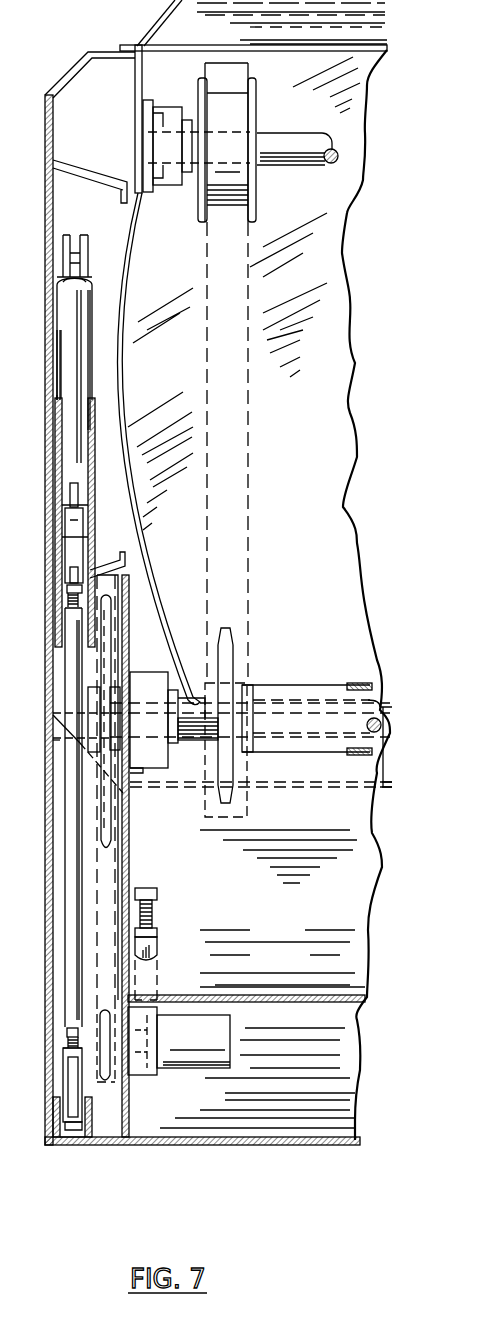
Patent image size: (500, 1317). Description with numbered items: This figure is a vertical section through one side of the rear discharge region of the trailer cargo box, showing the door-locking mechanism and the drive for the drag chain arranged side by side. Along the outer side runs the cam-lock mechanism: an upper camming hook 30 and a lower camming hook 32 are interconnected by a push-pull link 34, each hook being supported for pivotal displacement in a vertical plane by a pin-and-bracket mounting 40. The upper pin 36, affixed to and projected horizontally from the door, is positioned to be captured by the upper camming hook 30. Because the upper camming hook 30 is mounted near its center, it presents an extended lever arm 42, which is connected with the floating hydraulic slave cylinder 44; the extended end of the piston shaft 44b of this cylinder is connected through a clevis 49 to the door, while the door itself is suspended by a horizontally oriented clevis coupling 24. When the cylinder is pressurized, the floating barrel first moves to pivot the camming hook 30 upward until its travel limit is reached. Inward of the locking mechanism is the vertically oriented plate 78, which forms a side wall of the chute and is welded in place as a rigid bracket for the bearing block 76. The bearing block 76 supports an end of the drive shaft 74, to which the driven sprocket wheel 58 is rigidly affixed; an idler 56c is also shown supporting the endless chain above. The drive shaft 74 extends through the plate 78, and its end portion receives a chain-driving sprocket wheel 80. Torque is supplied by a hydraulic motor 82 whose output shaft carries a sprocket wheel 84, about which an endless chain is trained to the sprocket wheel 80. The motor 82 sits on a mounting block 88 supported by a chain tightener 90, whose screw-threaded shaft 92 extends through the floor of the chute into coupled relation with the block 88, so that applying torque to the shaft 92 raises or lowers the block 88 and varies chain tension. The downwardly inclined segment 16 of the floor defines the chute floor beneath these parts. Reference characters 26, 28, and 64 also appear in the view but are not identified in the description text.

The clevis coupling 24 is at (0, 20).
The housing wall 26 is at (183, 595).
The clevis 49 is at (85, 248).
The floating hydraulic slave cylinder 44 is at (77, 363).
The piston shaft 44b is at (46, 293).
The pin-and-bracket mounting 40 is at (28, 398).
The upper pin 36 is at (47, 488).
The upper camming hook 30 is at (75, 493).
The adjusting nut 28 is at (72, 587).
The push-pull link 34 is at (73, 890).
The chain-driving sprocket wheel 80 is at (110, 808).
The vertically oriented plate 78 is at (130, 860).
The bearing block 76 is at (152, 755).
The drive shaft 74 is at (205, 665).
The driven sprocket wheel 58 is at (225, 680).
The idler 56c is at (255, 117).
The screw-threaded shaft 92 is at (155, 918).
The chain tightener 90 is at (160, 937).
The downwardly inclined segment 16 is at (292, 971).
The hydraulic motor 82 is at (202, 1051).
The mounting block 88 is at (147, 1073).
The sprocket wheel 84 is at (105, 1068).
The lower camming hook 32 is at (72, 1100).
The extended lever arm 42 is at (41, 1063).
The member 64 is at (30, 759).